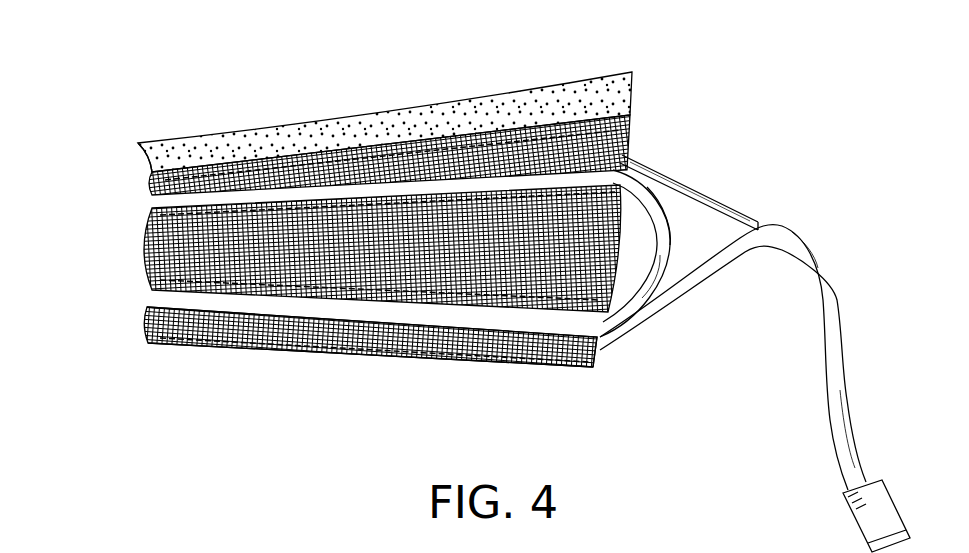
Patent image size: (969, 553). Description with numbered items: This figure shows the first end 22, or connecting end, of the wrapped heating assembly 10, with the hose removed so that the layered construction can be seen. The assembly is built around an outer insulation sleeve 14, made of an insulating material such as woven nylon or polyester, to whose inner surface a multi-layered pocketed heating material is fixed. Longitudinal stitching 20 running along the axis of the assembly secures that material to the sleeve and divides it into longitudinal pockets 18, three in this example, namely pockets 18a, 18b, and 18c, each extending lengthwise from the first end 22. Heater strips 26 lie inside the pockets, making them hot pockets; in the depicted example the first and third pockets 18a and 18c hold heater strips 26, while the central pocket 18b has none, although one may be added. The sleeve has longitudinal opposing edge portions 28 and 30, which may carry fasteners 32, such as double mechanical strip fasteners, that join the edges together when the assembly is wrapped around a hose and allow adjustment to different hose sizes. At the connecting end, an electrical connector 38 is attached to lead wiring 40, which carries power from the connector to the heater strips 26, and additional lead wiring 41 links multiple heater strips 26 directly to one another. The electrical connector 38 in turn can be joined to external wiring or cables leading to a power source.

The wrapped heating assembly 10 is at (777, 86).
The outer insulation sleeve 14 is at (150, 160).
The longitudinal pockets 18 is at (330, 168).
The first pocket 18a is at (330, 168).
The central pocket 18b is at (148, 253).
The third pocket 18c is at (143, 323).
The longitudinal stitching 20 is at (322, 153).
The first end 22 is at (623, 237).
The heater strips 26 is at (190, 203).
The longitudinal opposing edge portion 28 is at (248, 130).
The longitudinal opposing edge portion 30 is at (370, 357).
The fasteners 32 is at (473, 363).
The electrical connector 38 is at (887, 510).
The lead wiring 40 is at (710, 277).
The additional lead wiring 41 is at (663, 243).